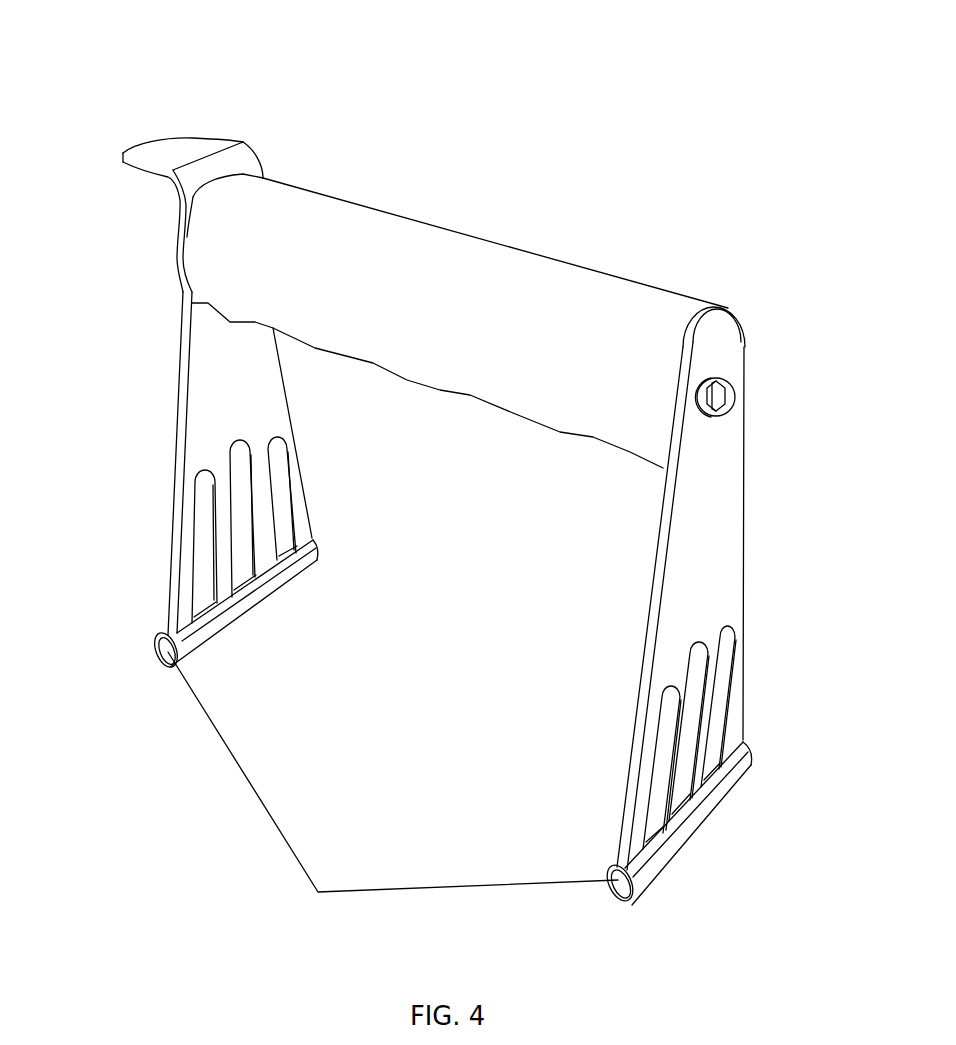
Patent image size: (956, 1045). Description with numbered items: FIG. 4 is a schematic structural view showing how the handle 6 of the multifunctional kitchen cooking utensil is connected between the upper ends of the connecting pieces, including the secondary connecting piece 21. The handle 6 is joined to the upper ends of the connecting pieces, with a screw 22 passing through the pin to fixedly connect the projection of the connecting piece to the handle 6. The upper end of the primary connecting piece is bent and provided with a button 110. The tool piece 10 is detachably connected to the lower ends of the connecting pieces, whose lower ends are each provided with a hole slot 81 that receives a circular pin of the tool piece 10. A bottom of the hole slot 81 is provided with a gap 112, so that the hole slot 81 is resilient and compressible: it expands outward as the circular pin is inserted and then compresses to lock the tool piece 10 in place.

The button 110 is at (167, 157).
The handle 6 is at (422, 233).
The tool piece 10 is at (195, 447).
The secondary connecting piece 21 is at (713, 603).
The screw 22 is at (727, 390).
The gap 112 is at (170, 650).
The hole slot 81 is at (393, 791).